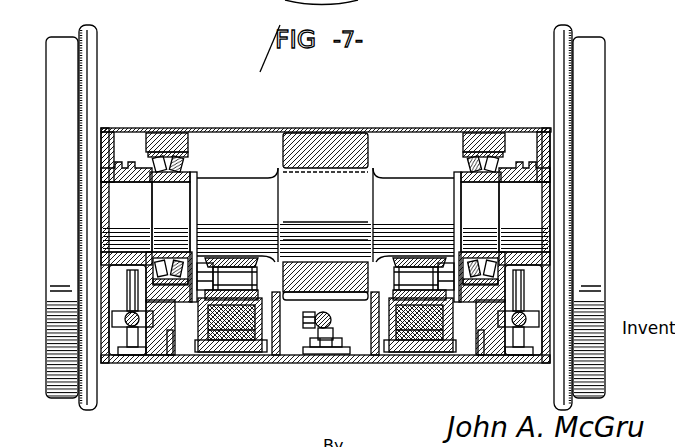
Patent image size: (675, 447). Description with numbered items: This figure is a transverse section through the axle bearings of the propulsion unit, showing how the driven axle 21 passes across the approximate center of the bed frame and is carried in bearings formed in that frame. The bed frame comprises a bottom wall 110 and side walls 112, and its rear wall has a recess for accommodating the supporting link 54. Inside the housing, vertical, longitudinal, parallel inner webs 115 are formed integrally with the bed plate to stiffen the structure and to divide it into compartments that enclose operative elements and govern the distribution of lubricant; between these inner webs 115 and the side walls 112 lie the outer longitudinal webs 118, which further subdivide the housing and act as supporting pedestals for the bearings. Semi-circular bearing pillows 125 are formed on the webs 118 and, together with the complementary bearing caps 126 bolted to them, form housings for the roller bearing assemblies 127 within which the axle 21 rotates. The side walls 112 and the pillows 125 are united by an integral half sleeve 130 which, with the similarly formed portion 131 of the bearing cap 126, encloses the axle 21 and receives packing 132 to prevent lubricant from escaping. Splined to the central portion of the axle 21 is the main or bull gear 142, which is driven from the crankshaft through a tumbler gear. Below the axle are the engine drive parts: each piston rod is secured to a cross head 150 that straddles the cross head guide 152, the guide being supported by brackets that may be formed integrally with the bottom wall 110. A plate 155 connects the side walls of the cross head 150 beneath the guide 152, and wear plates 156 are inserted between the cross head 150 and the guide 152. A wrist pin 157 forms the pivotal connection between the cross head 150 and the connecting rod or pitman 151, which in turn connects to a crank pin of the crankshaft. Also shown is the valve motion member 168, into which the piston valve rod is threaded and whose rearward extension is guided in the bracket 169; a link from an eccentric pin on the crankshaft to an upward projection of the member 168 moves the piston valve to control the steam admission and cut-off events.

The axle 21 is at (393, 183).
The supporting link 54 is at (413, 6).
The bottom wall 110 is at (248, 358).
The side walls 112 is at (102, 288).
The inner webs 115 is at (278, 342).
The outer longitudinal webs 118 is at (170, 352).
The bearing pillows 125 is at (148, 295).
The bearing caps 126 is at (152, 132).
The roller bearing assemblies 127 is at (186, 163).
The half sleeve 130 is at (102, 255).
The portion of the bearing cap 131 is at (133, 168).
The packing 132 is at (121, 180).
The main or bull gear 142 is at (330, 147).
The cross head 150 is at (257, 252).
The connecting rod or pitman 151 is at (230, 255).
The cross head guide 152 is at (222, 345).
The plate 155 is at (238, 340).
The wear plates 156 is at (404, 340).
The wrist pin 157 is at (190, 250).
The member 168 is at (127, 328).
The bracket 169 is at (125, 340).